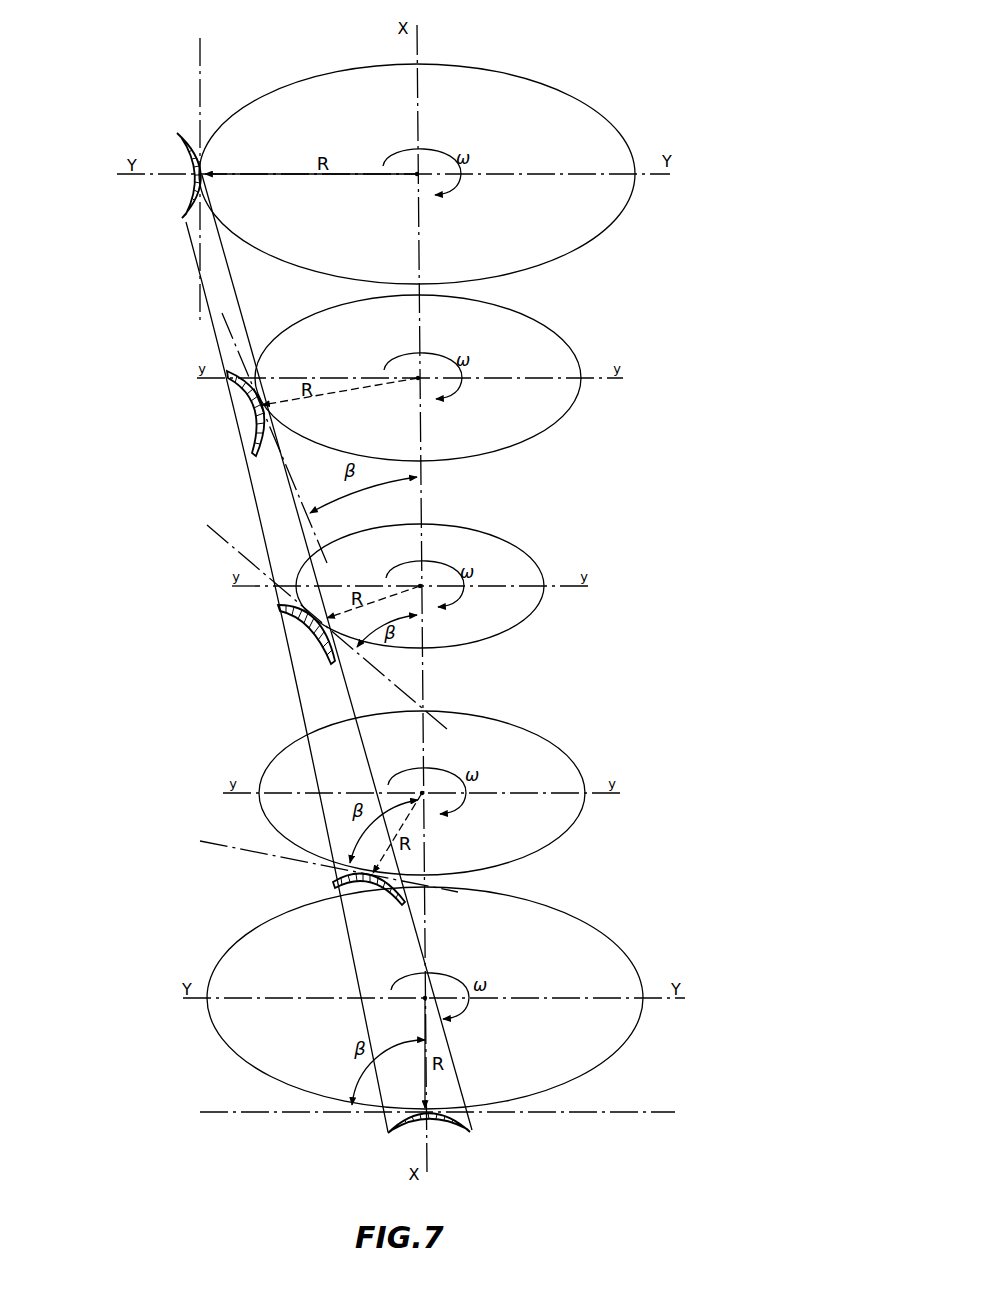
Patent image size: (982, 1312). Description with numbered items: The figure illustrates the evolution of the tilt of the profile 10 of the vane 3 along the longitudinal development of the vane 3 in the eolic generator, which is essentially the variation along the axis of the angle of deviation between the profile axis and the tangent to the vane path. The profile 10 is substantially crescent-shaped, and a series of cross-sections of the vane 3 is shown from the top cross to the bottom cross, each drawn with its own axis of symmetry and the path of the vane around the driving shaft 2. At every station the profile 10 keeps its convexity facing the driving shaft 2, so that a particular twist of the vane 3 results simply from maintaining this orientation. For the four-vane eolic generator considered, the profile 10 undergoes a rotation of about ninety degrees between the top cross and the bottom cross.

The driving shaft 2 is at (420, 88).
The vane 3 is at (150, 318).
The profile 10 is at (194, 132).